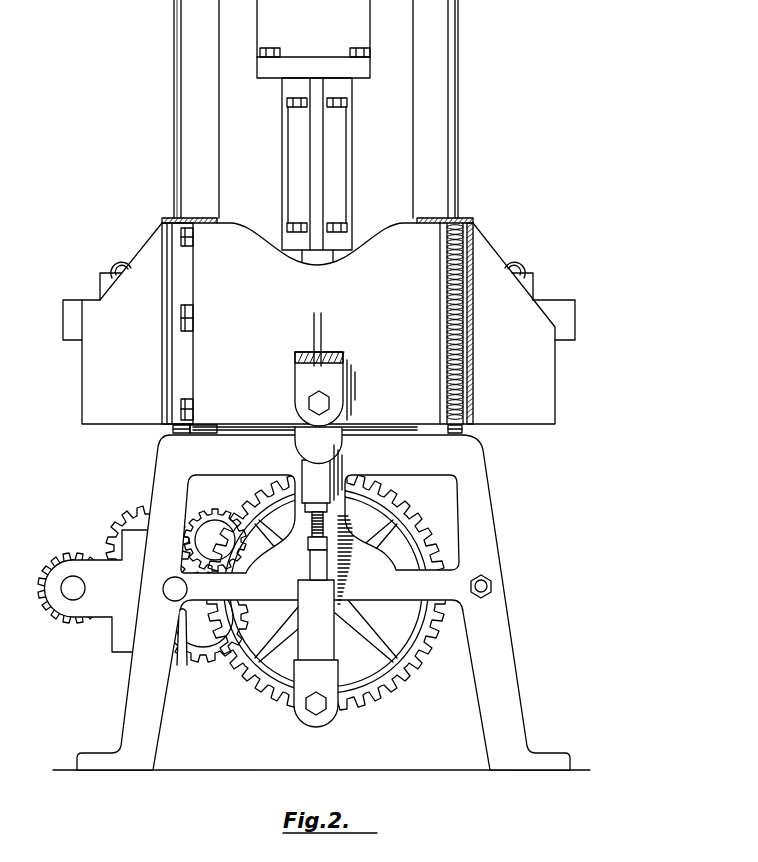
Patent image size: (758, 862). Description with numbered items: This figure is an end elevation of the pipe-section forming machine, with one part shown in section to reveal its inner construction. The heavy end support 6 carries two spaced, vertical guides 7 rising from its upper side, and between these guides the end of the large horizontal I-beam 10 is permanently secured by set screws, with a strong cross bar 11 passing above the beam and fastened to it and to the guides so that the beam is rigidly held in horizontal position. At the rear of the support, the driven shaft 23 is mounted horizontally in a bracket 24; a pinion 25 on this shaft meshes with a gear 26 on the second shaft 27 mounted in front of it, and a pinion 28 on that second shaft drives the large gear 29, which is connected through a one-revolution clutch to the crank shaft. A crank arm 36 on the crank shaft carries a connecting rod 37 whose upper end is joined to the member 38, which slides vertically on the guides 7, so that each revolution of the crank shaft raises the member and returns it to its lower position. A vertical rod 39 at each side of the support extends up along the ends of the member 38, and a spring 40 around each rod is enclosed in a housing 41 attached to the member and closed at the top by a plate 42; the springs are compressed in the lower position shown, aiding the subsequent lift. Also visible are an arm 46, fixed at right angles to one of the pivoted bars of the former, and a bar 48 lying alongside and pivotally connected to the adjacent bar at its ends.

The end support 6 is at (482, 512).
The guide 7 is at (230, 157).
The I-beam 10 is at (320, 165).
The cross bar 11 is at (300, 62).
The shaft 23 is at (70, 592).
The bracket 24 is at (103, 603).
The pinion 25 is at (62, 560).
The gear 26 is at (122, 538).
The second shaft 27 is at (170, 600).
The pinion 28 is at (183, 618).
The gear 29 is at (258, 673).
The crank arm 36 is at (352, 586).
The connecting rod 37 is at (330, 512).
The member 38 is at (270, 398).
The rod 39 is at (177, 78).
The spring 40 is at (175, 430).
The housing 41 is at (178, 293).
The plate 42 is at (162, 220).
The arm 46 is at (70, 303).
The bar 48 is at (100, 276).